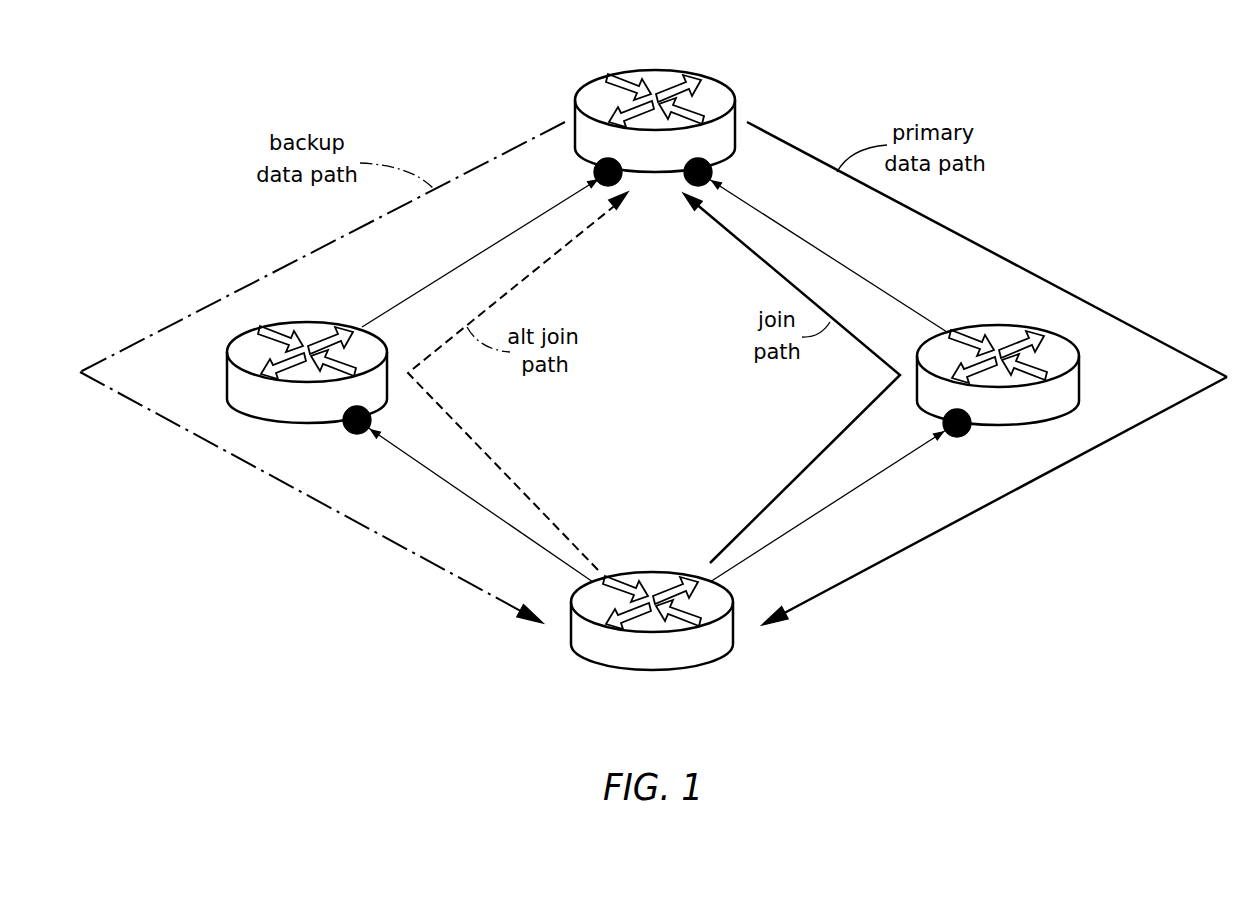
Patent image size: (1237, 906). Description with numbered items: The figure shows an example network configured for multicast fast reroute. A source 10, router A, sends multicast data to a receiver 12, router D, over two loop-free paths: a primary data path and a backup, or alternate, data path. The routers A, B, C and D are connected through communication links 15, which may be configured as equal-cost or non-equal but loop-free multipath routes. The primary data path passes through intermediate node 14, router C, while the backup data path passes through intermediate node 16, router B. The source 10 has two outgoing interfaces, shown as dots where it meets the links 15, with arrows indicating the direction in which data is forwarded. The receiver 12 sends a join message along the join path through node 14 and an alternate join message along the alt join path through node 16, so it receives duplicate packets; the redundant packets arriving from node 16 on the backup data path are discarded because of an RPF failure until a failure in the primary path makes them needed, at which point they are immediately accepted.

The source 10 is at (717, 82).
The receiver 12 is at (580, 655).
The intermediate node 14 is at (997, 323).
The intermediate node 16 is at (227, 367).
The communication links 15 is at (440, 275).